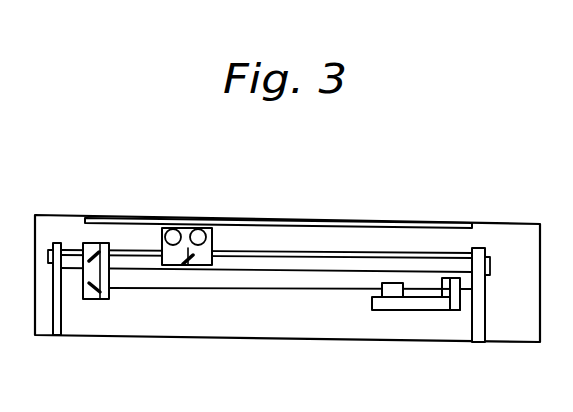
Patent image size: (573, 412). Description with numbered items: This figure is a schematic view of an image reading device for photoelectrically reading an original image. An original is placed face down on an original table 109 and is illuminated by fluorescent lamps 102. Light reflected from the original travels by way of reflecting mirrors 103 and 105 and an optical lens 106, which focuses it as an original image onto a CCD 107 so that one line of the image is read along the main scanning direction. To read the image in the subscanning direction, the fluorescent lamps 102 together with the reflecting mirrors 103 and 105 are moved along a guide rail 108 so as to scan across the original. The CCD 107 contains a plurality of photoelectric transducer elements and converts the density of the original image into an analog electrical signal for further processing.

The fluorescent lamps 102 is at (176, 228).
The reflecting mirror 103 is at (200, 266).
The reflecting mirror 105 is at (95, 299).
The optical lens 106 is at (390, 298).
The CCD 107 is at (445, 311).
The guide rail 108 is at (462, 252).
The original table 109 is at (363, 221).